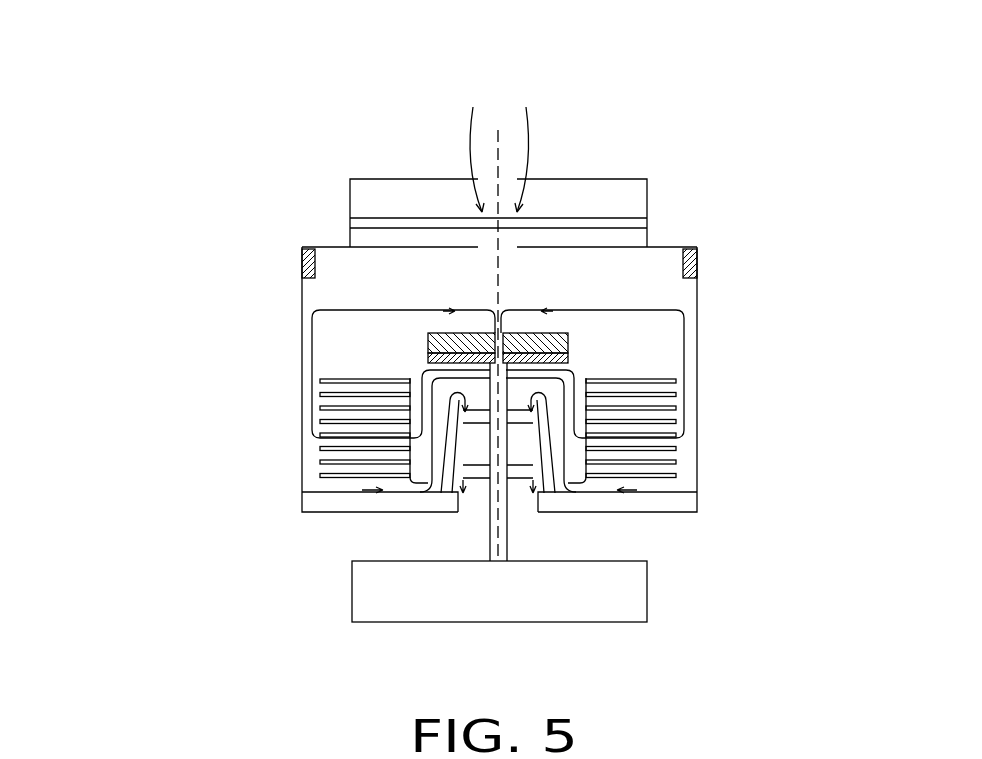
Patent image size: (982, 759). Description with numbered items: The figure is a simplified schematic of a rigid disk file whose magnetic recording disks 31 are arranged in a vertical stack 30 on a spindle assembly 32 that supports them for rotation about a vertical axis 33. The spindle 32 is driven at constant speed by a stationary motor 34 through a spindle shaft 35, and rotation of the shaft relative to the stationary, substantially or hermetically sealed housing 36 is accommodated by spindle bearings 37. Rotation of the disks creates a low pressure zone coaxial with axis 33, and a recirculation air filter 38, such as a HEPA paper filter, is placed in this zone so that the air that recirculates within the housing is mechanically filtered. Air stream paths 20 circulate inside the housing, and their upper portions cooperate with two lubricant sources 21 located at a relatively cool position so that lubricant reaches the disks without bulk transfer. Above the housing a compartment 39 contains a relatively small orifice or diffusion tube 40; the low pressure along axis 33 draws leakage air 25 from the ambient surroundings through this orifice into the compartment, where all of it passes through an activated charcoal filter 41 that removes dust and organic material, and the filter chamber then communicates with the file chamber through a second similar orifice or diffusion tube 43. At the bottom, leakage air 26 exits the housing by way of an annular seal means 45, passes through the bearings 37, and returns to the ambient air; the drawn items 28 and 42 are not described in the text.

The air stream paths 20 is at (312, 440).
The lubricant sources 21 is at (302, 276).
The leakage air 25 is at (480, 177).
The leakage air 26 is at (462, 488).
The shaft 28 is at (502, 532).
The vertical stack 30 is at (699, 380).
The magnetic recording disks 31 is at (560, 394).
The spindle assembly 32 is at (425, 440).
The vertical axis 33 is at (541, 495).
The motor 34 is at (487, 622).
The spindle shaft 35 is at (487, 540).
The housing 36 is at (300, 388).
The spindle bearings 37 is at (526, 480).
The recirculation air filter 38 is at (428, 334).
The compartment 39 is at (590, 178).
The orifice or diffusion tube 40 is at (518, 177).
The activated charcoal filter 41 is at (608, 218).
The top wall 42 is at (672, 247).
The orifice or diffusion tube 43 is at (497, 245).
The annular seal means 45 is at (442, 495).